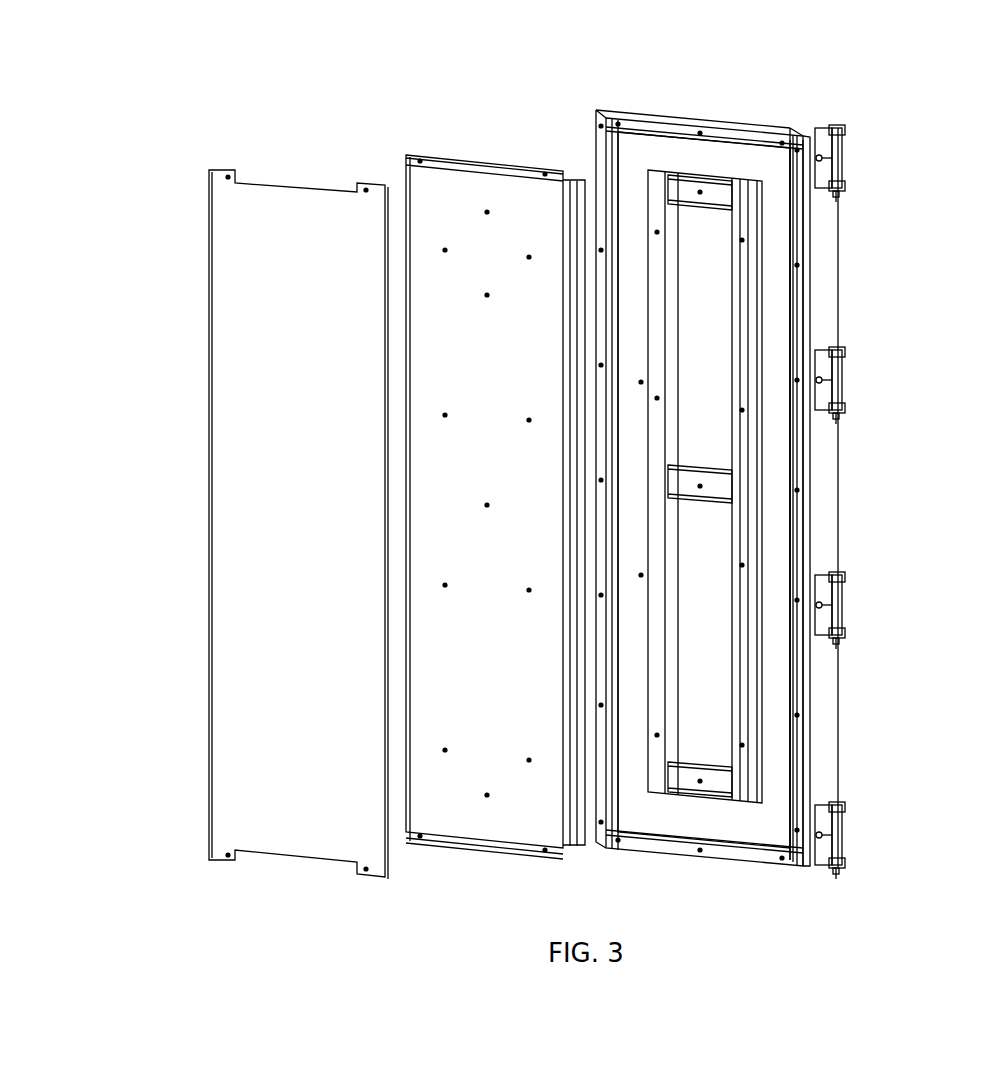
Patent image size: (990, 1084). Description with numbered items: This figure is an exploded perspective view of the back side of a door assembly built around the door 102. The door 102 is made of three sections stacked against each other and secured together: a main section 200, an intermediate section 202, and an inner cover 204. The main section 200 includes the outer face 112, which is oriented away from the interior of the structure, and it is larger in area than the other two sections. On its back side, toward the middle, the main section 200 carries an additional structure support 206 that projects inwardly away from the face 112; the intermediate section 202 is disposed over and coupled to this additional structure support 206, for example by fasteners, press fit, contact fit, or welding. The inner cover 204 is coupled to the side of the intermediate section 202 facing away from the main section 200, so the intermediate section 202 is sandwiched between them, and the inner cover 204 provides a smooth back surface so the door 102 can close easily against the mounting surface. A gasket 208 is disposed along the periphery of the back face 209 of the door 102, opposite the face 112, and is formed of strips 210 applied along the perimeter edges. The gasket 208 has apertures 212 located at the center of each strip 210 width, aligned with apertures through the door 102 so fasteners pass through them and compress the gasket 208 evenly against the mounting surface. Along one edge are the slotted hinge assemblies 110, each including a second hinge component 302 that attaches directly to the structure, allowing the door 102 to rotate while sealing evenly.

The door 102 is at (311, 108).
The hinge assembly 110 is at (847, 148).
The face 112 is at (852, 305).
The main section 200 is at (712, 160).
The intermediate section 202 is at (478, 195).
The inner cover 204 is at (226, 322).
The additional structure support 206 is at (745, 548).
The gasket 208 is at (802, 695).
The face 209 is at (775, 455).
The strip 210 is at (680, 125).
The aperture 212 is at (797, 265).
The second hinge component 302 is at (838, 165).